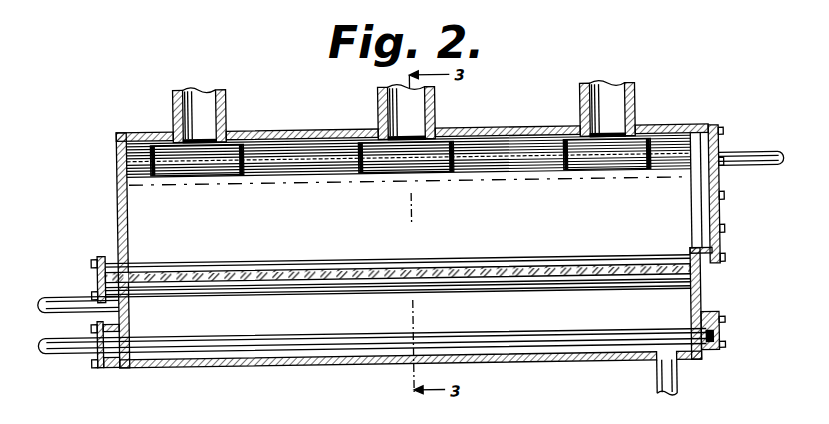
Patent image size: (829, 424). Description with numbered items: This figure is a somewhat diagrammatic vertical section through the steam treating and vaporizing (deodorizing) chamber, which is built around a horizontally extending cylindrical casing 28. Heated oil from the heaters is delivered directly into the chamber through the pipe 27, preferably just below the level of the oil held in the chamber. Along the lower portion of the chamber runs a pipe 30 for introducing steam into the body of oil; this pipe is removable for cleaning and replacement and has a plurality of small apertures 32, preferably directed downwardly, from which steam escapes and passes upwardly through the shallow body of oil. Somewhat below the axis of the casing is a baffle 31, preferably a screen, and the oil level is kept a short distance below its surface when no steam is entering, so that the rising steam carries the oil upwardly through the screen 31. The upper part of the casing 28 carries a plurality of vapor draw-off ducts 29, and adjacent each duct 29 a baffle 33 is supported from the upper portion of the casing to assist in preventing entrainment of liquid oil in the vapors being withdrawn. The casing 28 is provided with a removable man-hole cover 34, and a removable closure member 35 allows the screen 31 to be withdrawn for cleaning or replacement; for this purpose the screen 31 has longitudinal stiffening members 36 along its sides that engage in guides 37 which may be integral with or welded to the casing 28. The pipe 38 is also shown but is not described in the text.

The pipe 27 is at (53, 292).
The cylindrical casing 28 is at (193, 364).
The vapor draw-off duct 29 is at (228, 105).
The pipe 30 is at (68, 347).
The baffle 31 is at (440, 268).
The apertures 32 is at (100, 363).
The baffle 33 is at (186, 168).
The man-hole cover 34 is at (722, 223).
The closure member 35 is at (97, 267).
The longitudinal stiffening members 36 is at (480, 269).
The guides 37 is at (595, 261).
The outlet pipe 38 is at (756, 157).